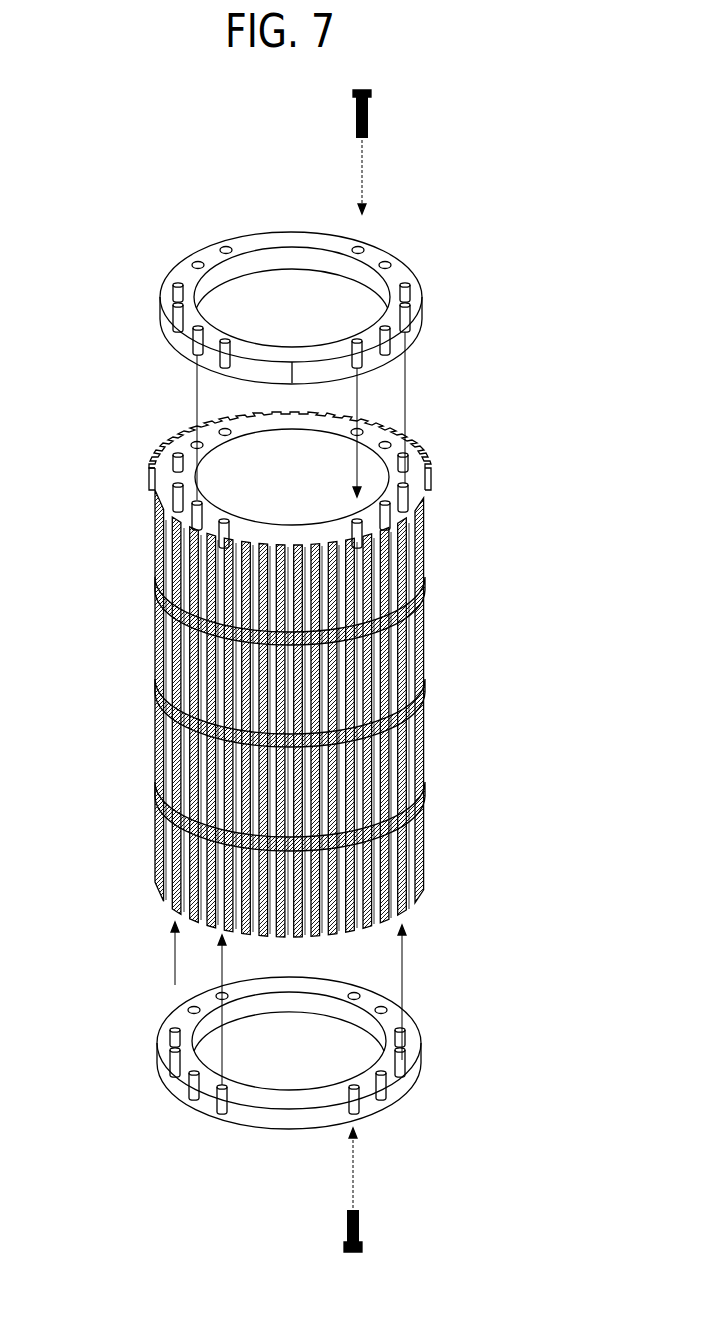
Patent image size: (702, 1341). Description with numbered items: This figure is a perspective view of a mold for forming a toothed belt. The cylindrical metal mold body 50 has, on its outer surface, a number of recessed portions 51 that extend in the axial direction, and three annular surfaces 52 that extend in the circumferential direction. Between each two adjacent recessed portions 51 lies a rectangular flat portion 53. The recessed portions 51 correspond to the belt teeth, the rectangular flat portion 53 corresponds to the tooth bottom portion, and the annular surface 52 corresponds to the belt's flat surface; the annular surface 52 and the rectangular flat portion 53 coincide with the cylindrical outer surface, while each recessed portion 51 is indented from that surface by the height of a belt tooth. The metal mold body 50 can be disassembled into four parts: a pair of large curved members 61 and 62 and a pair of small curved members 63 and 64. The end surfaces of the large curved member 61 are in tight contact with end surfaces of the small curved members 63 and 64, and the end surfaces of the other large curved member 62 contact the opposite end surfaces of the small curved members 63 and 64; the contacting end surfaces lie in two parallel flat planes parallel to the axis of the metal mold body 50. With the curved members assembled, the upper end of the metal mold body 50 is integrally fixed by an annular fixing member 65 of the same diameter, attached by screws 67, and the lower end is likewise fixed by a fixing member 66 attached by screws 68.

The metal mold body 50 is at (432, 520).
The recessed portions 51 is at (190, 745).
The annular surfaces 52 is at (425, 787).
The rectangular flat portion 53 is at (187, 757).
The large curved member 61 is at (160, 895).
The large curved member 62 is at (383, 420).
The small curved member 63 is at (150, 472).
The small curved member 64 is at (430, 470).
The fixing member 65 is at (378, 254).
The fixing member 66 is at (176, 1094).
The screws 67 is at (368, 114).
The screws 68 is at (358, 1232).